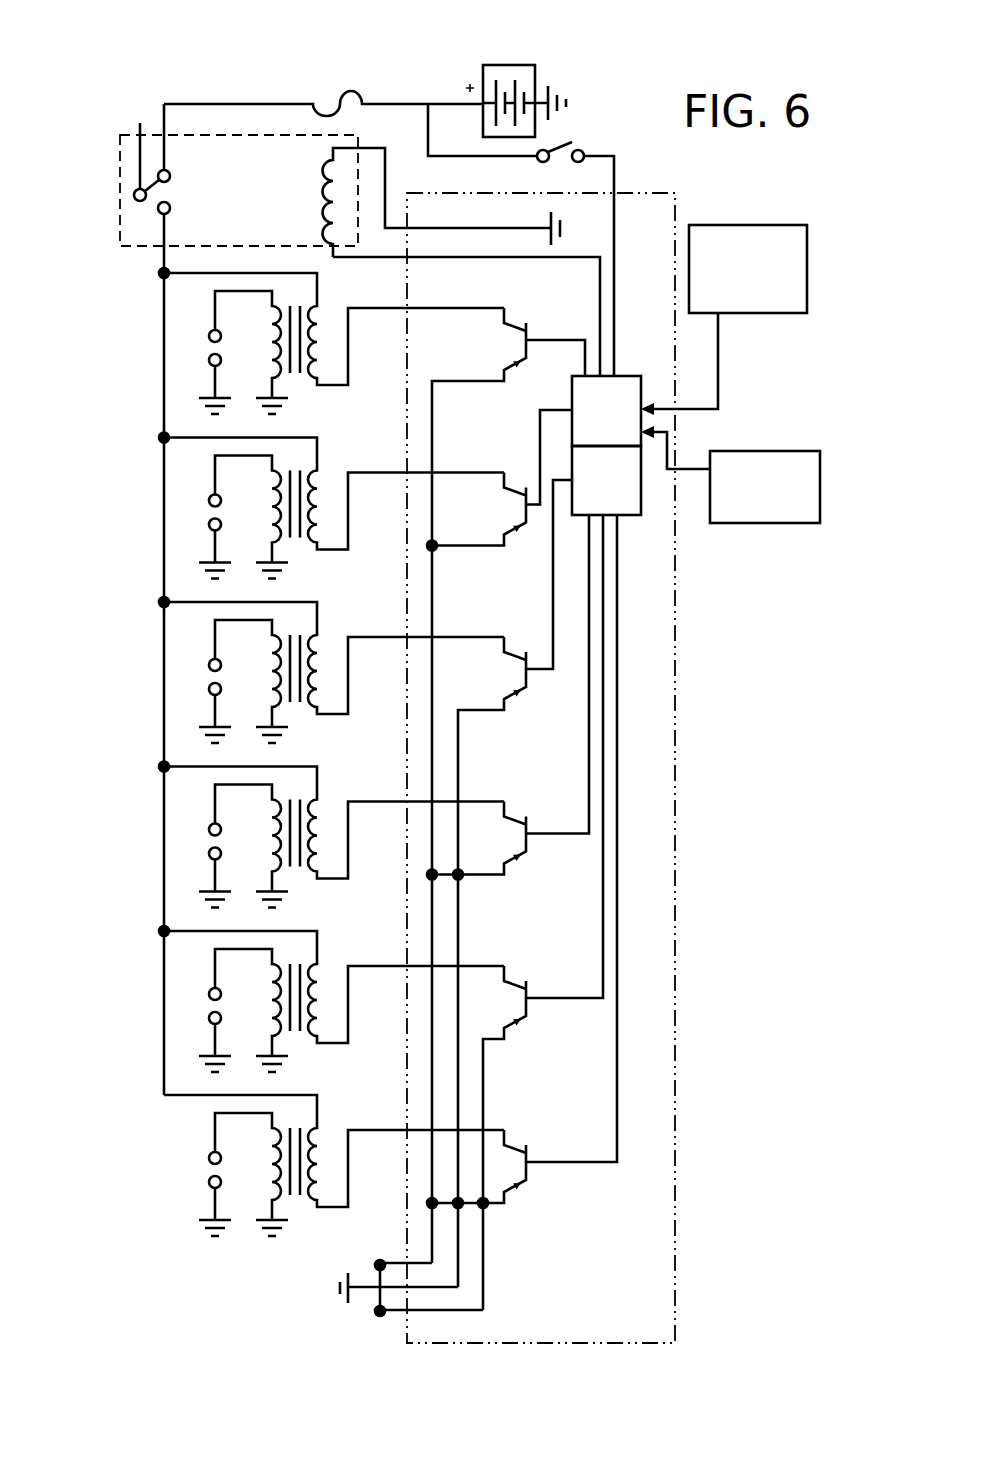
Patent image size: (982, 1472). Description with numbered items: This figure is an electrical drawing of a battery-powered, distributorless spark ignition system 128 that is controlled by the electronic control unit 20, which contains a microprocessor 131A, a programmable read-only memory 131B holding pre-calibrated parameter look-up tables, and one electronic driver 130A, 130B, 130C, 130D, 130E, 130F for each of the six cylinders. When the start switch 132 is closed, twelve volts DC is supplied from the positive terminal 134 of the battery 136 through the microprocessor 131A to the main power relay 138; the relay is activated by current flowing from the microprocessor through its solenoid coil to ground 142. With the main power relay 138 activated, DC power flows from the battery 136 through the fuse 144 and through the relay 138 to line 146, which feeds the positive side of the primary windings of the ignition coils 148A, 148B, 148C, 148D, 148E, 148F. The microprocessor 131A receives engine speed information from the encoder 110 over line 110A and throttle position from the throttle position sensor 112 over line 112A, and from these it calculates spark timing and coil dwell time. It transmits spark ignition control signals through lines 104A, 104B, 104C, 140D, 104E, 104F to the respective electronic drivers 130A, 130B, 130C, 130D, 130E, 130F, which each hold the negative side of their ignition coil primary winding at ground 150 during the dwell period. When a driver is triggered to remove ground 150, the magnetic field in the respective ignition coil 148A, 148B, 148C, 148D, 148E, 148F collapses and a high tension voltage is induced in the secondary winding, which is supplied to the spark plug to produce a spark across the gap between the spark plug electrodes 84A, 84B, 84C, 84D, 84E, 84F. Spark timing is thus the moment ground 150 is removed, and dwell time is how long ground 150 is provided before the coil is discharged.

The battery-powered, distributorless spark ignition system 128 is at (645, 71).
The fuse 144 is at (338, 100).
The battery 136 is at (519, 65).
The positive terminal 134 is at (483, 70).
The start switch 132 is at (573, 143).
The main power relay 138 is at (118, 162).
The line 146 is at (328, 175).
The ground 142 is at (566, 228).
The electronic control unit 20 is at (545, 1343).
The microprocessor 131A is at (572, 389).
The programmable read-only memory 131B is at (630, 515).
The throttle position sensor 112 is at (807, 245).
The line 112A is at (718, 366).
The crankshaft position sensor / encoder 110 is at (738, 523).
The line 110A is at (693, 466).
The spark plug electrodes 84A is at (200, 347).
The spark plug electrodes 84B is at (200, 512).
The spark plug electrodes 84C is at (200, 676).
The spark plug electrodes 84D is at (200, 840).
The spark plug electrodes 84E is at (200, 1005).
The spark plug electrodes 84F is at (200, 1169).
The ignition coil 148A is at (310, 397).
The ignition coil 148B is at (310, 562).
The ignition coil 148C is at (310, 726).
The ignition coil 148D is at (310, 890).
The ignition coil 148E is at (310, 1055).
The ignition coil 148F is at (310, 1219).
The electronic driver 130A is at (520, 338).
The electronic driver 130B is at (520, 506).
The electronic driver 130C is at (520, 668).
The electronic driver 130D is at (520, 833).
The electronic driver 130E is at (530, 1005).
The electronic driver 130F is at (530, 1170).
The line 104A is at (535, 338).
The line 104B is at (540, 433).
The line 104C is at (553, 572).
The control line D 140D is at (590, 752).
The line 104E is at (603, 878).
The line 104F is at (617, 1060).
The ground 150 is at (333, 1288).